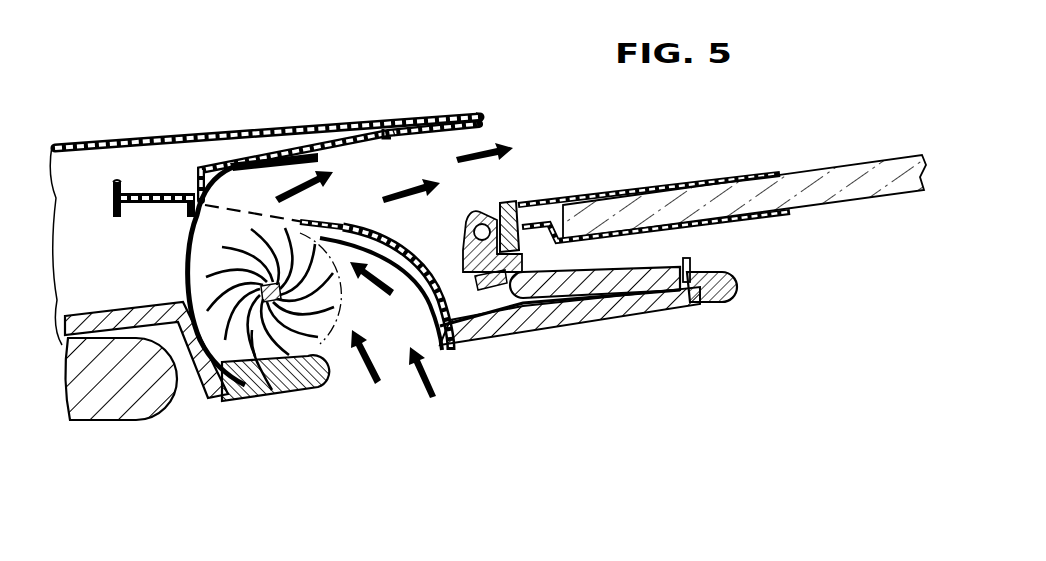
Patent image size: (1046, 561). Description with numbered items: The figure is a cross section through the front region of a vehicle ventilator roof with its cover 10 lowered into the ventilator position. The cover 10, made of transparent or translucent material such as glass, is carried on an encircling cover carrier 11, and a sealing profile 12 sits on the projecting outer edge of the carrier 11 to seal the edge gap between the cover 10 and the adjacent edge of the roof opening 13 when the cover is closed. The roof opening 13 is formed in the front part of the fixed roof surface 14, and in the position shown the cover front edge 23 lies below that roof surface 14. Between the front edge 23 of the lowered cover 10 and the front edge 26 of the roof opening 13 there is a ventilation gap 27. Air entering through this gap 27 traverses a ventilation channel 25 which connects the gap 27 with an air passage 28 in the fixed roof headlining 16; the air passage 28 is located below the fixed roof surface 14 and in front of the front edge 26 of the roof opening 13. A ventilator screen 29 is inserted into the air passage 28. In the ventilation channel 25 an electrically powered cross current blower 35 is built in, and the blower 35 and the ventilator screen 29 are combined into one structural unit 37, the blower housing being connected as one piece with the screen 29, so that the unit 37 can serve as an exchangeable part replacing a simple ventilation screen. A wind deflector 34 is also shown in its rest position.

The cover 10 is at (832, 184).
The cover carrier 11 is at (763, 222).
The sealing profile 12 is at (487, 318).
The roof opening 13 is at (689, 134).
The fixed roof surface 14 is at (147, 144).
The fixed roof headlining 16 is at (580, 318).
The cover front edge 23 is at (520, 204).
The ventilation channel 25 is at (257, 195).
The front edge of roof opening 26 is at (472, 112).
The ventilation gap 27 is at (485, 133).
The air passage 28 is at (340, 363).
The ventilator screen 29 is at (278, 392).
The wind deflector 34 is at (627, 320).
The cross current blower 35 is at (245, 390).
The structural unit 37 is at (343, 185).